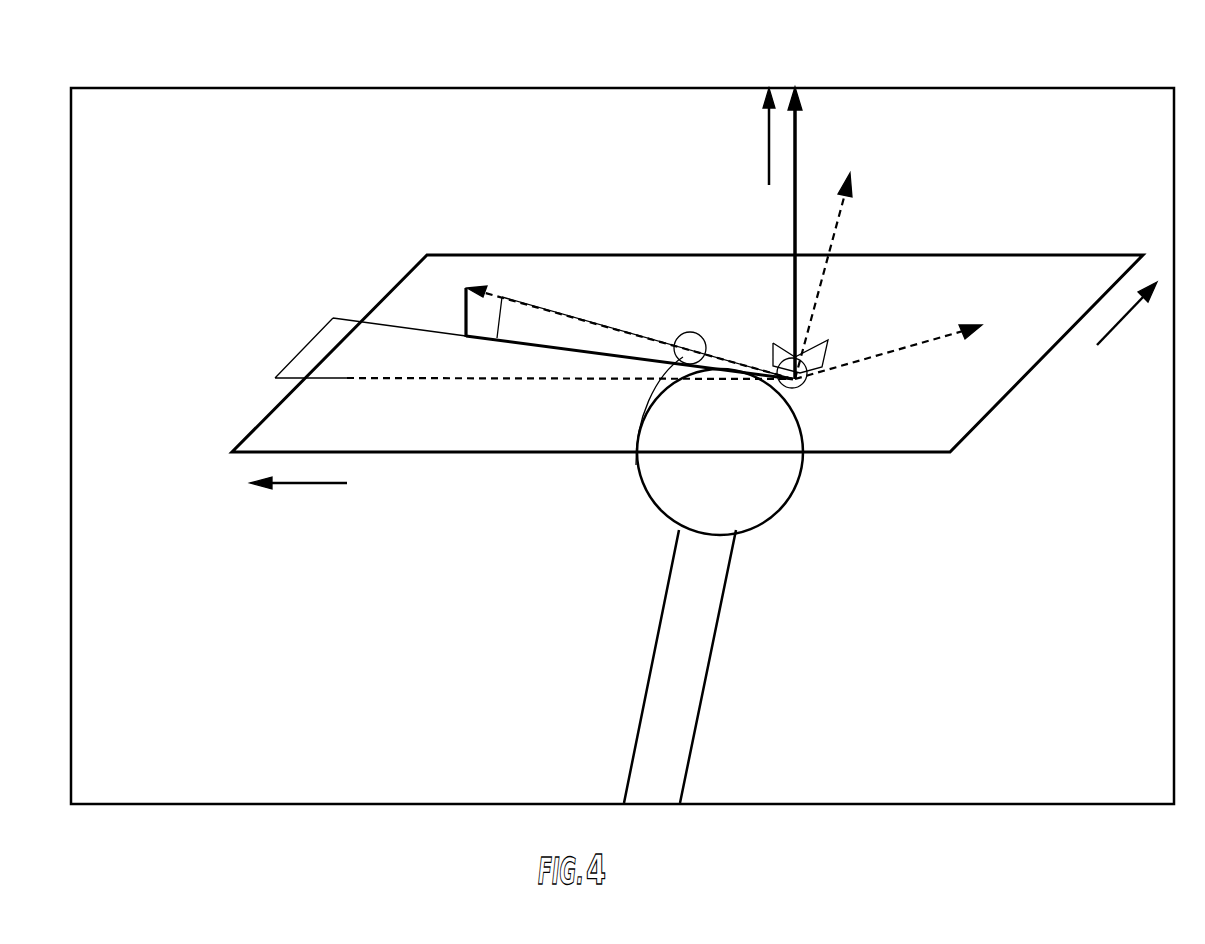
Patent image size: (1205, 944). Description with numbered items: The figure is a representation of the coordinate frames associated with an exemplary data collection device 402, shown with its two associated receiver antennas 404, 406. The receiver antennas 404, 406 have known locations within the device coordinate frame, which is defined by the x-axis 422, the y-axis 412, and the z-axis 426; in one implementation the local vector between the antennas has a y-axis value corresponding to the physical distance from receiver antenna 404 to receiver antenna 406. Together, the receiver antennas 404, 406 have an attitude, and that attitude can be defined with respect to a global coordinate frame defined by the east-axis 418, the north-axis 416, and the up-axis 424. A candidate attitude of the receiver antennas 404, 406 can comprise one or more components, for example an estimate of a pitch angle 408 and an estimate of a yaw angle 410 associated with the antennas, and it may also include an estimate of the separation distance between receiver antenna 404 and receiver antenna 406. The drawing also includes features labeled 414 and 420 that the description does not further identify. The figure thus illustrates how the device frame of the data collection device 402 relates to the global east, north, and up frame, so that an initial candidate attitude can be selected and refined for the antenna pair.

The data collection device 402 is at (693, 600).
The receiver antenna 404 is at (800, 387).
The receiver antenna 406 is at (685, 357).
The pitch angle 408 is at (508, 325).
The yaw angle 410 is at (300, 345).
The y-axis 412 is at (534, 305).
The ground plane 414 is at (1007, 275).
The north-axis 416 is at (335, 500).
The east-axis 418 is at (1128, 313).
The antenna post 420 is at (465, 318).
The x-axis 422 is at (968, 337).
The up-axis 424 is at (798, 133).
The z-axis 426 is at (837, 217).